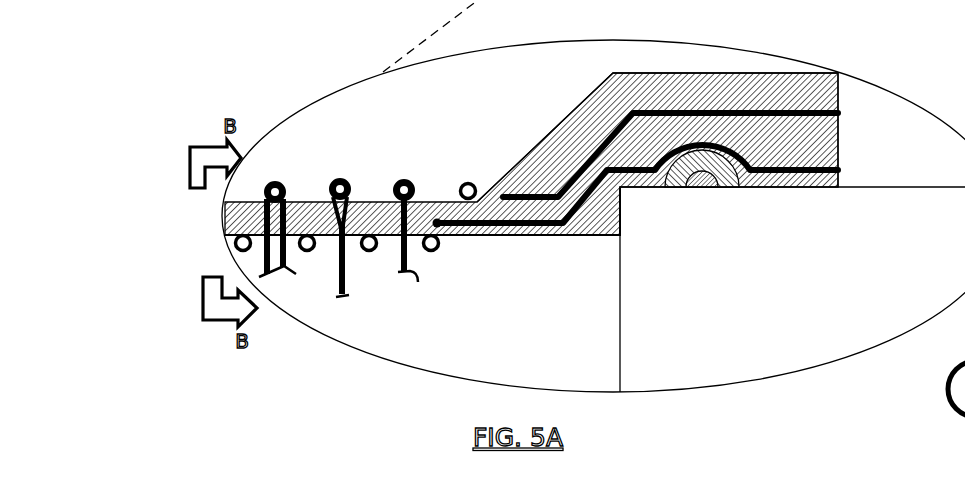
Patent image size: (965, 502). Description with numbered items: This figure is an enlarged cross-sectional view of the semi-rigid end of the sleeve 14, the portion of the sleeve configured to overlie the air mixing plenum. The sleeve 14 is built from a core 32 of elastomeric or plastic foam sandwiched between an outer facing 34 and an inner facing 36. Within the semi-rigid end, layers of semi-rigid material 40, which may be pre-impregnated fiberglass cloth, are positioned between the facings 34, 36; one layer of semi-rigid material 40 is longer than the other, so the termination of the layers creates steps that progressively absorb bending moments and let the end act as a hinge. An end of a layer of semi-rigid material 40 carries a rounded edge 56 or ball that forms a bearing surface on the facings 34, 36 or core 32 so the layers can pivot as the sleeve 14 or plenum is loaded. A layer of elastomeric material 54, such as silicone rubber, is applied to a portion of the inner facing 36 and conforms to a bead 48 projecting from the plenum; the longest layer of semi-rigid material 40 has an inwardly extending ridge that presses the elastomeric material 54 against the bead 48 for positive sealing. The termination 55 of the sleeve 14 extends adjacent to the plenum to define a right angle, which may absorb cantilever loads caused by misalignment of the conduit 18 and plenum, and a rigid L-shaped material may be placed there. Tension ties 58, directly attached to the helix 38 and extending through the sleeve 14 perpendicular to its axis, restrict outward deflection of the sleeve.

The sleeve 14 is at (375, 202).
The conduit 18 is at (887, 187).
The core 32 is at (438, 221).
The outer facing 34 is at (600, 85).
The inner facing 36 is at (542, 236).
The helix 38 is at (473, 185).
The semi-rigid material 40 is at (792, 167).
The bead 48 is at (688, 188).
The elastomeric material 54 is at (700, 150).
The termination 55 is at (588, 236).
The rounded edge 56 is at (507, 196).
The tension ties 58 is at (297, 201).